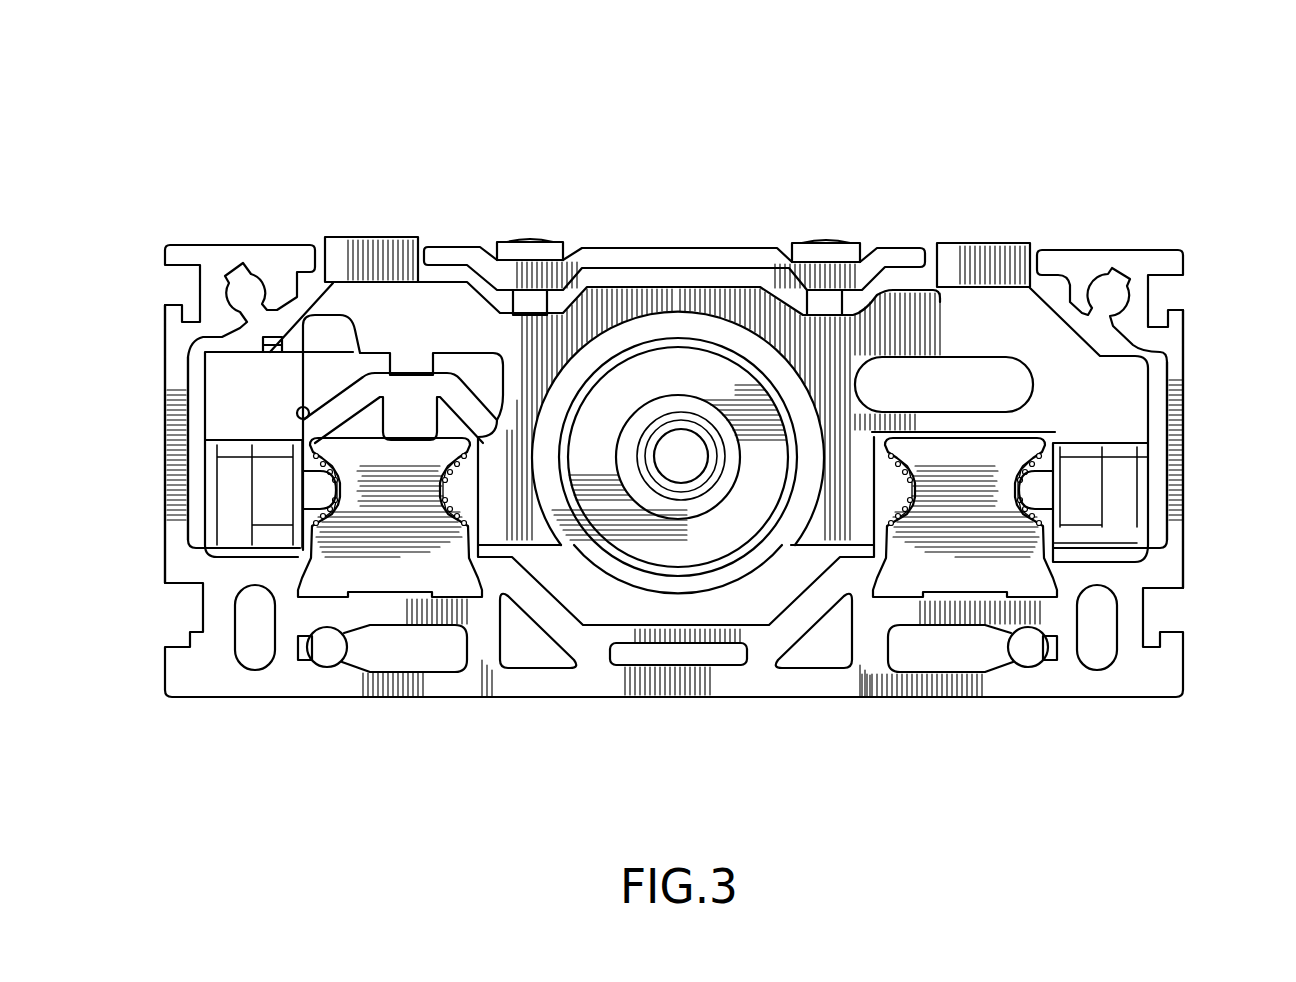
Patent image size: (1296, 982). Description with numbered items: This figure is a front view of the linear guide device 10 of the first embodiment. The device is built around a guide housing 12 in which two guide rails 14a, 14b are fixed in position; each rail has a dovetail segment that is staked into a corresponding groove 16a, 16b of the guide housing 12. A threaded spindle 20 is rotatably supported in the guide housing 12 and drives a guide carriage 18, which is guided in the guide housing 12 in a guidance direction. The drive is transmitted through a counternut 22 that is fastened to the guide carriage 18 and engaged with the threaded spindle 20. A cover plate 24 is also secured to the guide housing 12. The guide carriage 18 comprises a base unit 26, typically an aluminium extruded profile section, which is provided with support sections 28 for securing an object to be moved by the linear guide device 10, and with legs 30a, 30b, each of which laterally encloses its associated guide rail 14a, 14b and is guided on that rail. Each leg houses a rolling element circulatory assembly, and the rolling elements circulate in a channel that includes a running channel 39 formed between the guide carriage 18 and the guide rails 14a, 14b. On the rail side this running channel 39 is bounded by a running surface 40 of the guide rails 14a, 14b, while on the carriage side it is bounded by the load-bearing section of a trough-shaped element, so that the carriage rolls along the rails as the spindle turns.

The linear guide device 10 is at (1153, 128).
The guide housing 12 is at (1138, 678).
The guide rail 14a is at (395, 582).
The guide rail 14b is at (910, 577).
The groove 16a is at (363, 598).
The groove 16b is at (985, 603).
The guide carriage 18 is at (973, 225).
The threaded spindle 20 is at (678, 473).
The counternut 22 is at (592, 550).
The cover plate 24 is at (695, 250).
The base unit 26 is at (440, 300).
The support section 28 is at (352, 245).
The leg 30a is at (200, 412).
The leg 30b is at (1153, 405).
The running channel 39 is at (308, 474).
The running surface 40 is at (308, 515).